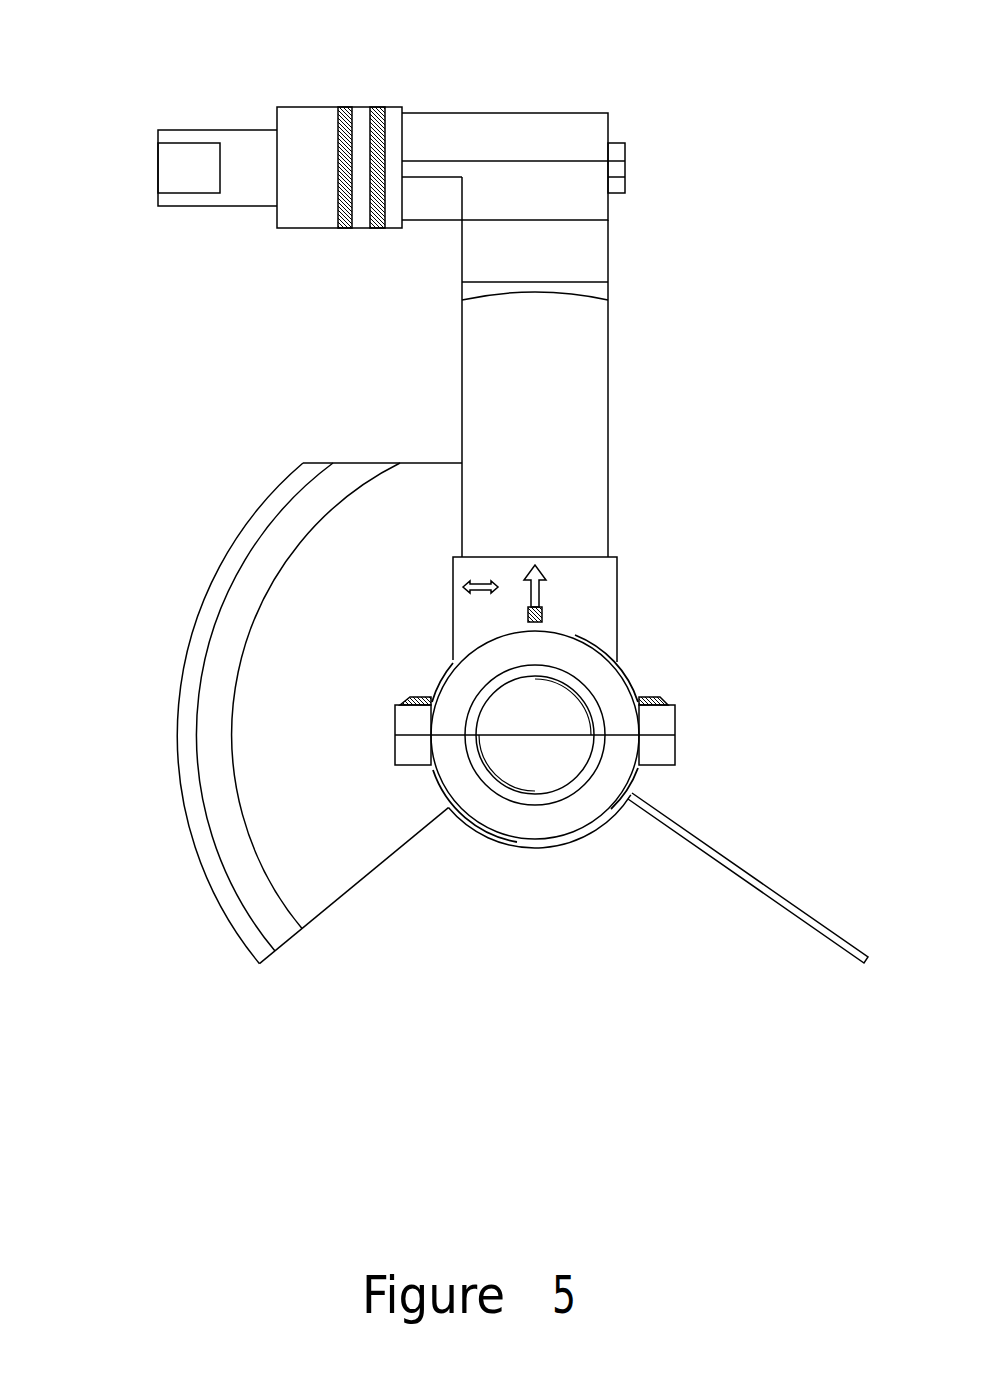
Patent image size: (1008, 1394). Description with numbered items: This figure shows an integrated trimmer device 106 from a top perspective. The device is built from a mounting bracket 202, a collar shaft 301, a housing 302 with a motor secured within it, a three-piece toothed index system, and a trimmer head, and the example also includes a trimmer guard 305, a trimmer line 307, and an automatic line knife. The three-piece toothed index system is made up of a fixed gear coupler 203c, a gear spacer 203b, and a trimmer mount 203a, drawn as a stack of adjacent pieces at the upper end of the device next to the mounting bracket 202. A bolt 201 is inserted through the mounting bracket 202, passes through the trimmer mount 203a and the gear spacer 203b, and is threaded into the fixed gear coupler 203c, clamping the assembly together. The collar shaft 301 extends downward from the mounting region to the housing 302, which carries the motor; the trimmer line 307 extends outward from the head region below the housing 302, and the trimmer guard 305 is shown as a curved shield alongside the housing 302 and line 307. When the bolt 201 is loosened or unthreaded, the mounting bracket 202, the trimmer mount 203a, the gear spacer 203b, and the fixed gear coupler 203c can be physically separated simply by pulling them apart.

The integrated trimmer device 106 is at (700, 388).
The bolt 201 is at (715, 147).
The mounting bracket 202 is at (516, 110).
The trimmer mount 203a is at (442, 116).
The gear spacer 203b is at (302, 114).
The fixed gear coupler 203c is at (235, 115).
The collar shaft 301 is at (622, 367).
The housing 302 is at (594, 702).
The trimmer guard 305 is at (259, 713).
The trimmer line 307 is at (748, 866).